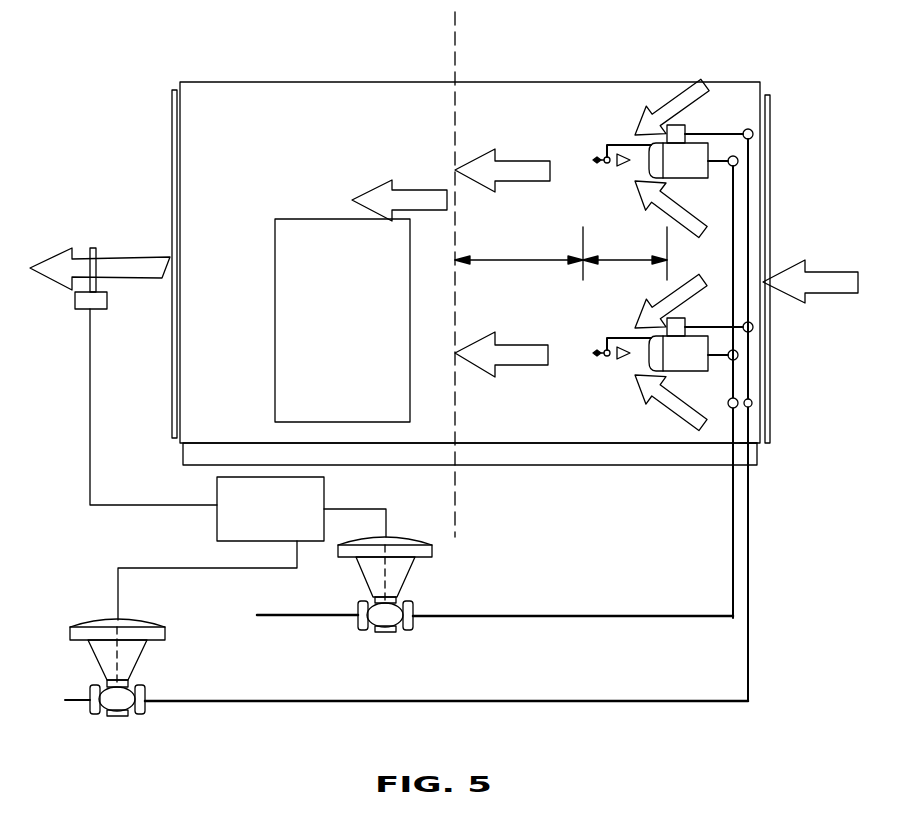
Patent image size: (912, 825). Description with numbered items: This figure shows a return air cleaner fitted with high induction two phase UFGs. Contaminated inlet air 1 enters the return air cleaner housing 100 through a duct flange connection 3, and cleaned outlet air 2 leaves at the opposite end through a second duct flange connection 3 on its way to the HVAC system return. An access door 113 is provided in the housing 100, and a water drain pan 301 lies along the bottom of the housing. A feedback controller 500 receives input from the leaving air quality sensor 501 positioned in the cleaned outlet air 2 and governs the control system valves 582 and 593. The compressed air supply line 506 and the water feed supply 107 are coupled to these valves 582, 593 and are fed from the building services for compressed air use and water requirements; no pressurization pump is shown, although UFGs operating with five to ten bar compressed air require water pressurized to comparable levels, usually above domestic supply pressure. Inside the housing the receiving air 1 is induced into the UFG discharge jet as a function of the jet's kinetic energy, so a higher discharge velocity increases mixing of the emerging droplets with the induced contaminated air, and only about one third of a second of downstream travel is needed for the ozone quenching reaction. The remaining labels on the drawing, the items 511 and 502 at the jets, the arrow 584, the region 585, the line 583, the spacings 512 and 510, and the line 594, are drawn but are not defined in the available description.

The return air cleaner housing 100 is at (390, 81).
The duct flange connection 3 is at (173, 143).
The cleaned outlet air 2 is at (53, 256).
The contaminated inlet air 1 is at (824, 272).
The leaving air quality sensor 501 is at (90, 342).
The upstream region 585 is at (293, 137).
The flow direction arrow 584 is at (362, 194).
The access door 113 is at (342, 320).
The distance 512 is at (519, 253).
The distance 510 is at (625, 253).
The boundary line 583 is at (455, 302).
The nozzle 511 is at (700, 148).
The spray flow arrows 502 is at (668, 104).
The water drain pan 301 is at (753, 458).
The supply line 594 is at (740, 523).
The feedback controller 500 is at (252, 548).
The control system valve 593 is at (100, 617).
The water feed supply 107 is at (80, 697).
The compressed air supply line 506 is at (298, 616).
The control system valve 582 is at (405, 582).